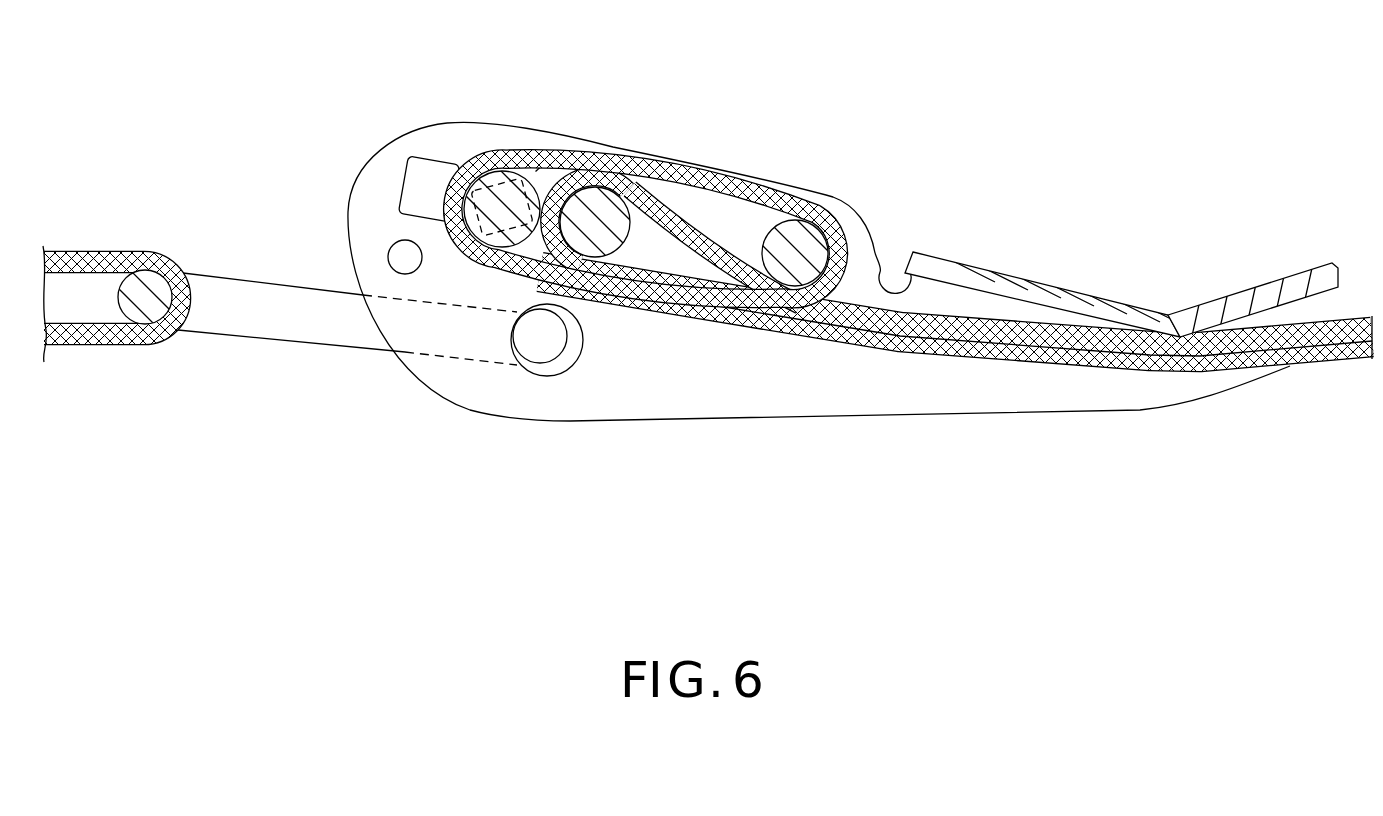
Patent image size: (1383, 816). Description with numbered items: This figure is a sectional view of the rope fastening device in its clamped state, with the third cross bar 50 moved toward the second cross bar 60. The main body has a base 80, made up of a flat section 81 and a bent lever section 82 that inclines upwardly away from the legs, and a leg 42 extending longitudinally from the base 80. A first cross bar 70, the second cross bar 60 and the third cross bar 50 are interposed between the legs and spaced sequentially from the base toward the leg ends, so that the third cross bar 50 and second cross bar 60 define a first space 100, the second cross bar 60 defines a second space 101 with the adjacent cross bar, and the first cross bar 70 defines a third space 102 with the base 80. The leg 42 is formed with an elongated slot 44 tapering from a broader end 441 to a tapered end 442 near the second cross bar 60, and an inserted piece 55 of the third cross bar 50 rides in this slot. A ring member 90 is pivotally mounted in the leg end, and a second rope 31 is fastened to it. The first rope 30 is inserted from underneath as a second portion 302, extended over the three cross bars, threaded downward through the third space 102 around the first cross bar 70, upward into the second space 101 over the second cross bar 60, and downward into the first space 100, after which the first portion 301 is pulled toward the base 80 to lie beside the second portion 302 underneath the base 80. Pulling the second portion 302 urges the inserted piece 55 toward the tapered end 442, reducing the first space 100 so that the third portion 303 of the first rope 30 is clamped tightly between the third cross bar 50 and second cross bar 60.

The first rope 30 is at (872, 272).
The second rope 31 is at (83, 257).
The leg 42 is at (652, 397).
The elongated slot 44 is at (438, 157).
The broader end 441 is at (403, 190).
The tapered end 442 is at (548, 160).
The third cross bar 50 is at (535, 172).
The inserted piece 55 is at (505, 175).
The second cross bar 60 is at (643, 177).
The first cross bar 70 is at (813, 226).
The base 80 is at (1128, 232).
The flat section 81 is at (1073, 290).
The bent lever section 82 is at (1340, 267).
The ring member 90 is at (237, 337).
The first space 100 is at (503, 257).
The second space 101 is at (723, 227).
The third space 102 is at (886, 245).
The first portion 301 is at (1238, 333).
The second portion 302 is at (1213, 355).
The third portion 303 is at (517, 252).